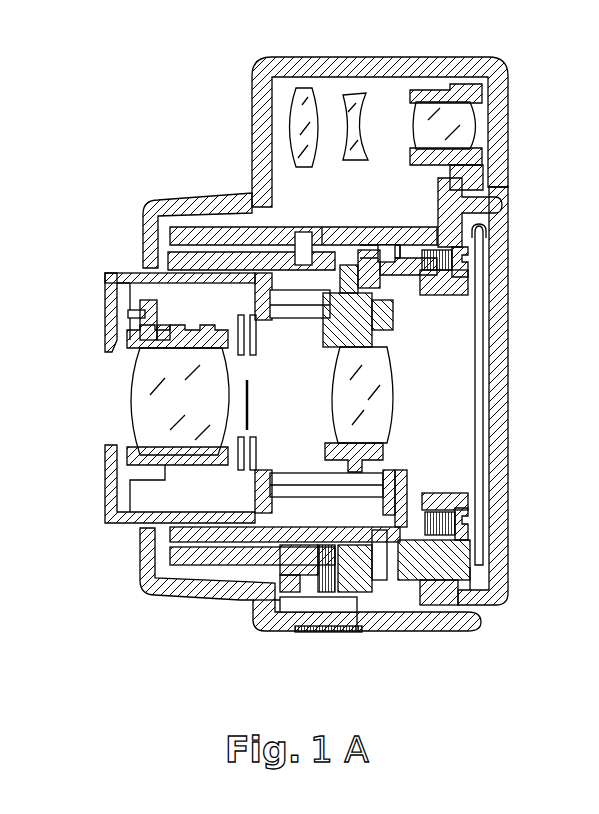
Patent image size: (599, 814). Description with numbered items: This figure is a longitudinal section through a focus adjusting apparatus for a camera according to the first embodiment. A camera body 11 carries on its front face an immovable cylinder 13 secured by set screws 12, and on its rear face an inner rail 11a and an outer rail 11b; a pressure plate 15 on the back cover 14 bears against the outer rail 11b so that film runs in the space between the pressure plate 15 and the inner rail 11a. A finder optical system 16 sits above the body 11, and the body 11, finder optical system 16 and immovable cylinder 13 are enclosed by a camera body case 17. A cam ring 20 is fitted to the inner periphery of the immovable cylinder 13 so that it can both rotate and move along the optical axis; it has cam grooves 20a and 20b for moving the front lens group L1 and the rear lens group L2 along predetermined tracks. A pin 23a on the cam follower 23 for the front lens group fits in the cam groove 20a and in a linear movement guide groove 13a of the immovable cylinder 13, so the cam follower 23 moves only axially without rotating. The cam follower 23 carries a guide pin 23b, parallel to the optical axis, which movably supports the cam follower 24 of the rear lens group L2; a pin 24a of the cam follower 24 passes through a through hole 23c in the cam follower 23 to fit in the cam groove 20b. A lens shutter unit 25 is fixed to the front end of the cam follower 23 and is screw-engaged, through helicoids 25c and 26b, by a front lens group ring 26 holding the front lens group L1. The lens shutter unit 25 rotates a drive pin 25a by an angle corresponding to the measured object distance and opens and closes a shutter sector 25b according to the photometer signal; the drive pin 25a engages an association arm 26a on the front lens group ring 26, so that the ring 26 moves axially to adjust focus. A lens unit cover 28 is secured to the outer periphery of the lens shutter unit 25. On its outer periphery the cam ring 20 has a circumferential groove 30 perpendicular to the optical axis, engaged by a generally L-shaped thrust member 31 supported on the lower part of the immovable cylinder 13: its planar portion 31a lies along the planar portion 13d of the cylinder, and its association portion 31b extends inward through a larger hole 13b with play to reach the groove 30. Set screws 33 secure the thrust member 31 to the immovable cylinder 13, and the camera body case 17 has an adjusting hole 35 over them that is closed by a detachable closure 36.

The camera body 11 is at (500, 217).
The inner rail 11a is at (468, 293).
The outer rail 11b is at (486, 233).
The set screws 12 is at (464, 258).
The immovable cylinder 13 is at (150, 206).
The linear movement guide groove 13a is at (185, 202).
The larger hole 13b is at (430, 630).
The planar portion 13d is at (258, 608).
The back cover 14 is at (506, 392).
The pressure plate 15 is at (481, 462).
The finder optical system 16 is at (383, 95).
The camera body case 17 is at (400, 628).
The cam ring 20 is at (240, 246).
The cam groove 20a is at (330, 238).
The cam groove 20b is at (378, 248).
The cam follower 23 is at (265, 252).
The pin 23a is at (301, 230).
The guide pin 23b is at (292, 312).
The through hole 23c is at (385, 282).
The cam follower 24 is at (375, 325).
The pin 24a is at (348, 283).
The lens shutter unit 25 is at (165, 298).
The drive pin 25a is at (130, 313).
The shutter sector 25b is at (250, 406).
The helicoid 25c is at (140, 323).
The front lens group ring 26 is at (125, 350).
The association arm 26a is at (123, 290).
The helicoid 26b is at (135, 375).
The lens unit cover 28 is at (110, 512).
The circumferential groove 30 is at (398, 248).
The thrust member 31 is at (365, 600).
The planar portion 31a is at (300, 575).
The association portion 31b is at (462, 630).
The set screws 33 is at (302, 600).
The adjusting hole 35 is at (324, 632).
The closure 36 is at (350, 630).
The front lens group L1 is at (132, 412).
The rear lens group L2 is at (380, 428).